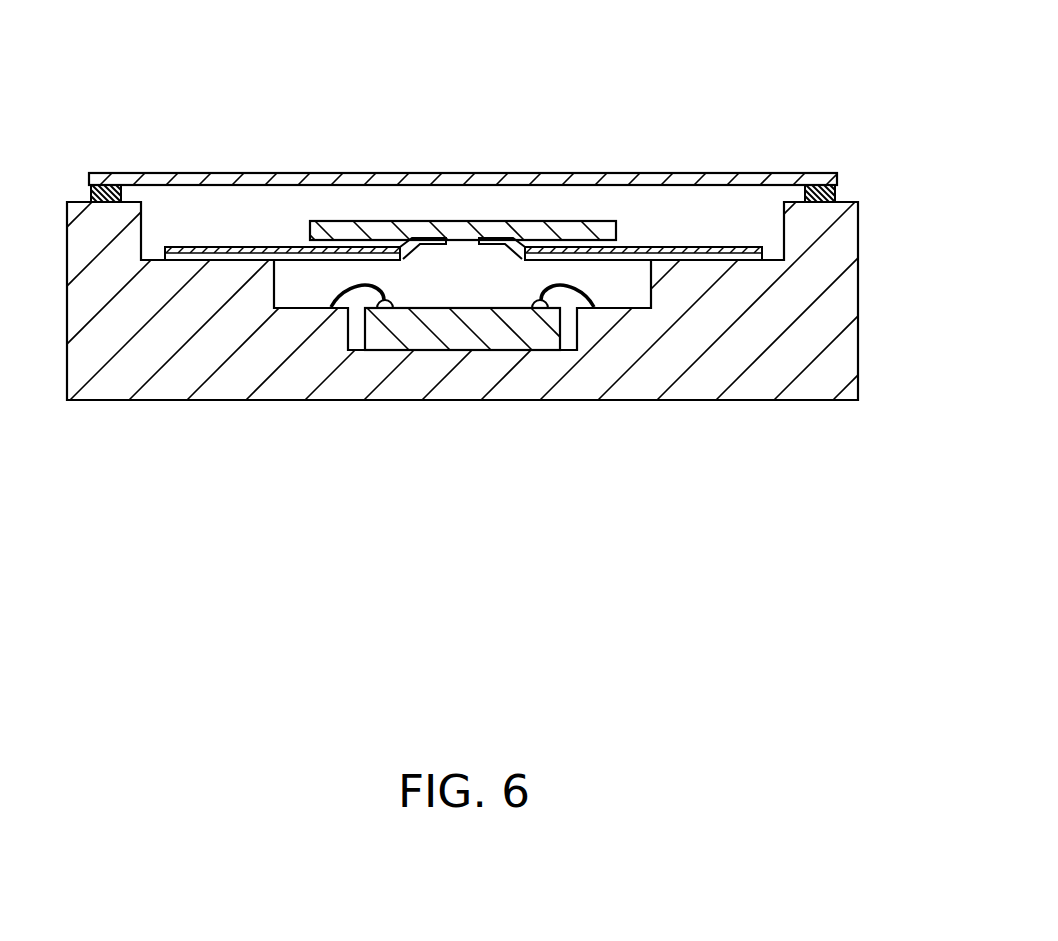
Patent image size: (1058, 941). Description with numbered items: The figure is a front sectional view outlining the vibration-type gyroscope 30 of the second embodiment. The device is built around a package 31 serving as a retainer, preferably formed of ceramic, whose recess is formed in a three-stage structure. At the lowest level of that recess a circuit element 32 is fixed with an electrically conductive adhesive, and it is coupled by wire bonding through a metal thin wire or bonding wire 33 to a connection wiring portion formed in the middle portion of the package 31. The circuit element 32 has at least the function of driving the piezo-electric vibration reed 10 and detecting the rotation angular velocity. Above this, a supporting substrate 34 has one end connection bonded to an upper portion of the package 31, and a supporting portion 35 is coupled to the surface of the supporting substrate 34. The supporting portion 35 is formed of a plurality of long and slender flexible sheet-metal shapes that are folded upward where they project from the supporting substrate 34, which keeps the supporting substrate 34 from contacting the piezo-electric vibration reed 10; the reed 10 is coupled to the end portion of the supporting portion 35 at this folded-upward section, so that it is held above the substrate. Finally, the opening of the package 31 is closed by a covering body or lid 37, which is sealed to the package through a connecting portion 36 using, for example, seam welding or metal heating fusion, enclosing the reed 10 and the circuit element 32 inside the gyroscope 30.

The vibration-type gyroscope 30 is at (847, 80).
The package 31 is at (756, 388).
The circuit element 32 is at (463, 342).
The metal thin wire (bonding wire) 33 is at (336, 302).
The supporting substrate 34 is at (242, 249).
The supporting portion 35 is at (478, 249).
The connecting portion 36 is at (91, 195).
The covering body (lid) 37 is at (753, 174).
The piezo-electric vibration reed 10 is at (545, 222).